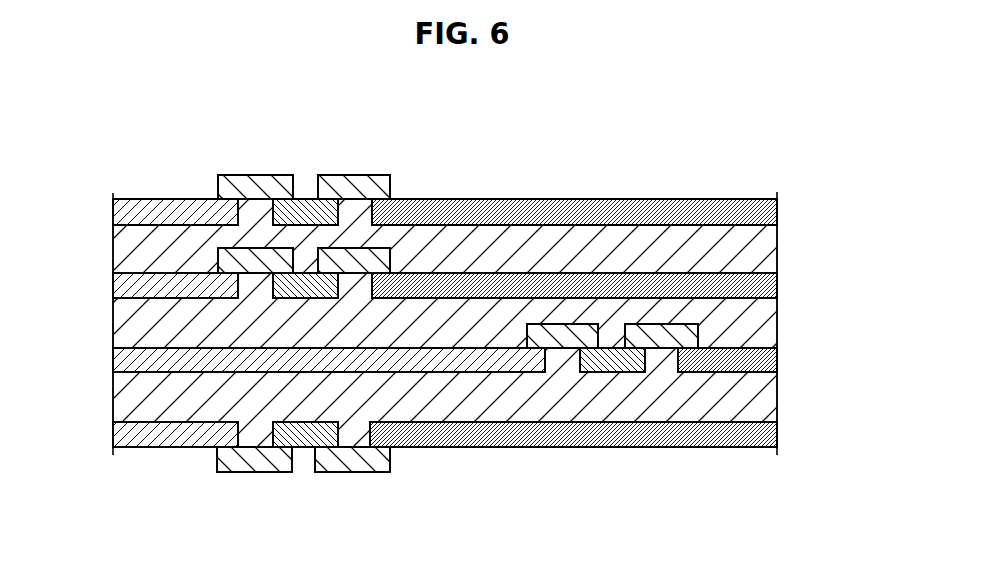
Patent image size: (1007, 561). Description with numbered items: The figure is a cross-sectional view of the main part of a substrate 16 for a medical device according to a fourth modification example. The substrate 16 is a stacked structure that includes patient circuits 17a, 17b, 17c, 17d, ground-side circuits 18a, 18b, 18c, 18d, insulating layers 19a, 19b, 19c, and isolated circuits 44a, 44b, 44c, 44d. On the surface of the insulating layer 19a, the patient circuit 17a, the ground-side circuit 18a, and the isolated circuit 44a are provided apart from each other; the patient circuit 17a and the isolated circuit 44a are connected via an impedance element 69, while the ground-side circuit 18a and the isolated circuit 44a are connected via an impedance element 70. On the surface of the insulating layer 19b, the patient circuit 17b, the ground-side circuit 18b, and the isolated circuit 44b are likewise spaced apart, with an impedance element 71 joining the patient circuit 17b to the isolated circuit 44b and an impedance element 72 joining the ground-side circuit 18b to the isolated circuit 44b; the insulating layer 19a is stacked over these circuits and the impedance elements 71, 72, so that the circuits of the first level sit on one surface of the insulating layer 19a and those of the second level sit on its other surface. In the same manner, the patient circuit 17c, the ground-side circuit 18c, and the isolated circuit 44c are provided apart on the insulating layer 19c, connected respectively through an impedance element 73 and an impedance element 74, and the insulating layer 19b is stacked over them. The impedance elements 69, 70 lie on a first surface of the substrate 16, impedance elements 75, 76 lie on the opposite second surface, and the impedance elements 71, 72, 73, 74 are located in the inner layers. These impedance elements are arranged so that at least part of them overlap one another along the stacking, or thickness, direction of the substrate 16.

The substrate 16 is at (497, 148).
The patient circuit 17a is at (118, 208).
The patient circuit 17b is at (118, 282).
The patient circuit 17c is at (118, 357).
The patient circuit 17d is at (118, 431).
The ground-side circuit 18a is at (777, 209).
The ground-side circuit 18b is at (777, 283).
The ground-side circuit 18c is at (777, 358).
The ground-side circuit 18d is at (777, 432).
The insulating layer 19a is at (118, 244).
The insulating layer 19b is at (118, 319).
The insulating layer 19c is at (118, 394).
The isolated circuit 44a is at (302, 211).
The isolated circuit 44b is at (308, 285).
The isolated circuit 44c is at (613, 366).
The isolated circuit 44d is at (300, 436).
The impedance element 69 is at (248, 176).
The impedance element 70 is at (355, 183).
The impedance element 71 is at (233, 260).
The impedance element 72 is at (378, 258).
The impedance element 73 is at (562, 340).
The impedance element 74 is at (665, 338).
The impedance element 75 is at (252, 461).
The impedance element 76 is at (348, 461).